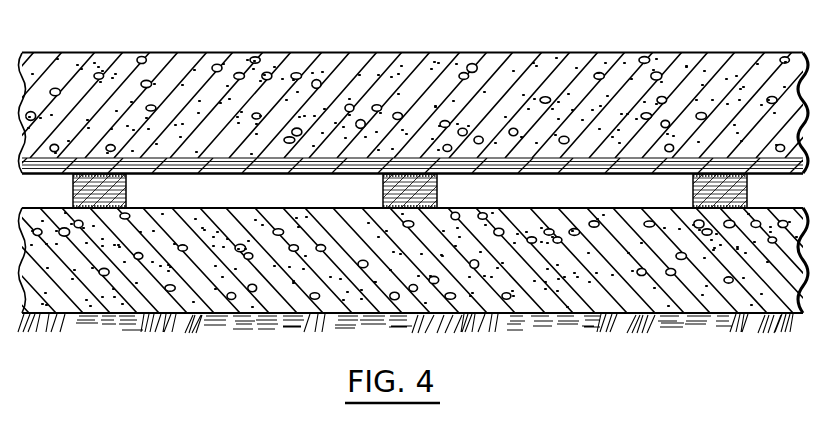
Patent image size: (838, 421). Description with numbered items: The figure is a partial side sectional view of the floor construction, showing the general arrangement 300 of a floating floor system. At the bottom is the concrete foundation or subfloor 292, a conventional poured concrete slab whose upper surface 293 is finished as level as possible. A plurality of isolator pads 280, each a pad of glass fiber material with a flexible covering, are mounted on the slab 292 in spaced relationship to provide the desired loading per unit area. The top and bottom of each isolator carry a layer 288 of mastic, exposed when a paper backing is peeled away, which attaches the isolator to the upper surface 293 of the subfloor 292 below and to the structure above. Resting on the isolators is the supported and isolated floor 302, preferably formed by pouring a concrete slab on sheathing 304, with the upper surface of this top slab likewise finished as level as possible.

The upper concrete slab 300 is at (178, 50).
The supported and isolated floor 302 is at (447, 52).
The sheathing 304 is at (325, 174).
The isolator pad 280 is at (131, 203).
The layer of mastic 288 is at (73, 190).
The upper surface 293 is at (535, 208).
The concrete foundation or subfloor 292 is at (583, 317).